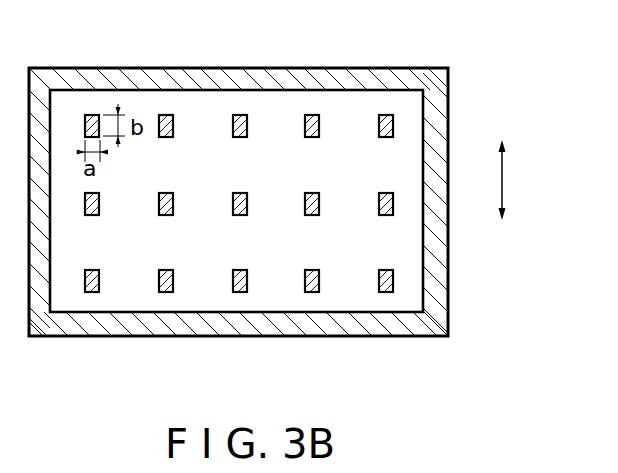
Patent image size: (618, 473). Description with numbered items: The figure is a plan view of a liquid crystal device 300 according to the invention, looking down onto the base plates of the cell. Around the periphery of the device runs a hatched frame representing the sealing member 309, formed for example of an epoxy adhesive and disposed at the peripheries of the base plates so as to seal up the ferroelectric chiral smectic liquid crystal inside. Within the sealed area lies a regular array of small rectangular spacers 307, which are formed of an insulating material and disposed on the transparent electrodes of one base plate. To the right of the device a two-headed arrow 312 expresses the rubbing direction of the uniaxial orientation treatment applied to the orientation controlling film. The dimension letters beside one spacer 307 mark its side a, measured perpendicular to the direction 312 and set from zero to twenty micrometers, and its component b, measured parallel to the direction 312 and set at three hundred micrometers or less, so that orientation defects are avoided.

The mask / shadow mask plate 300 is at (461, 103).
The spacer 307 is at (320, 116).
The sealing member 309 is at (438, 327).
The two-headed arrow 312 is at (503, 193).